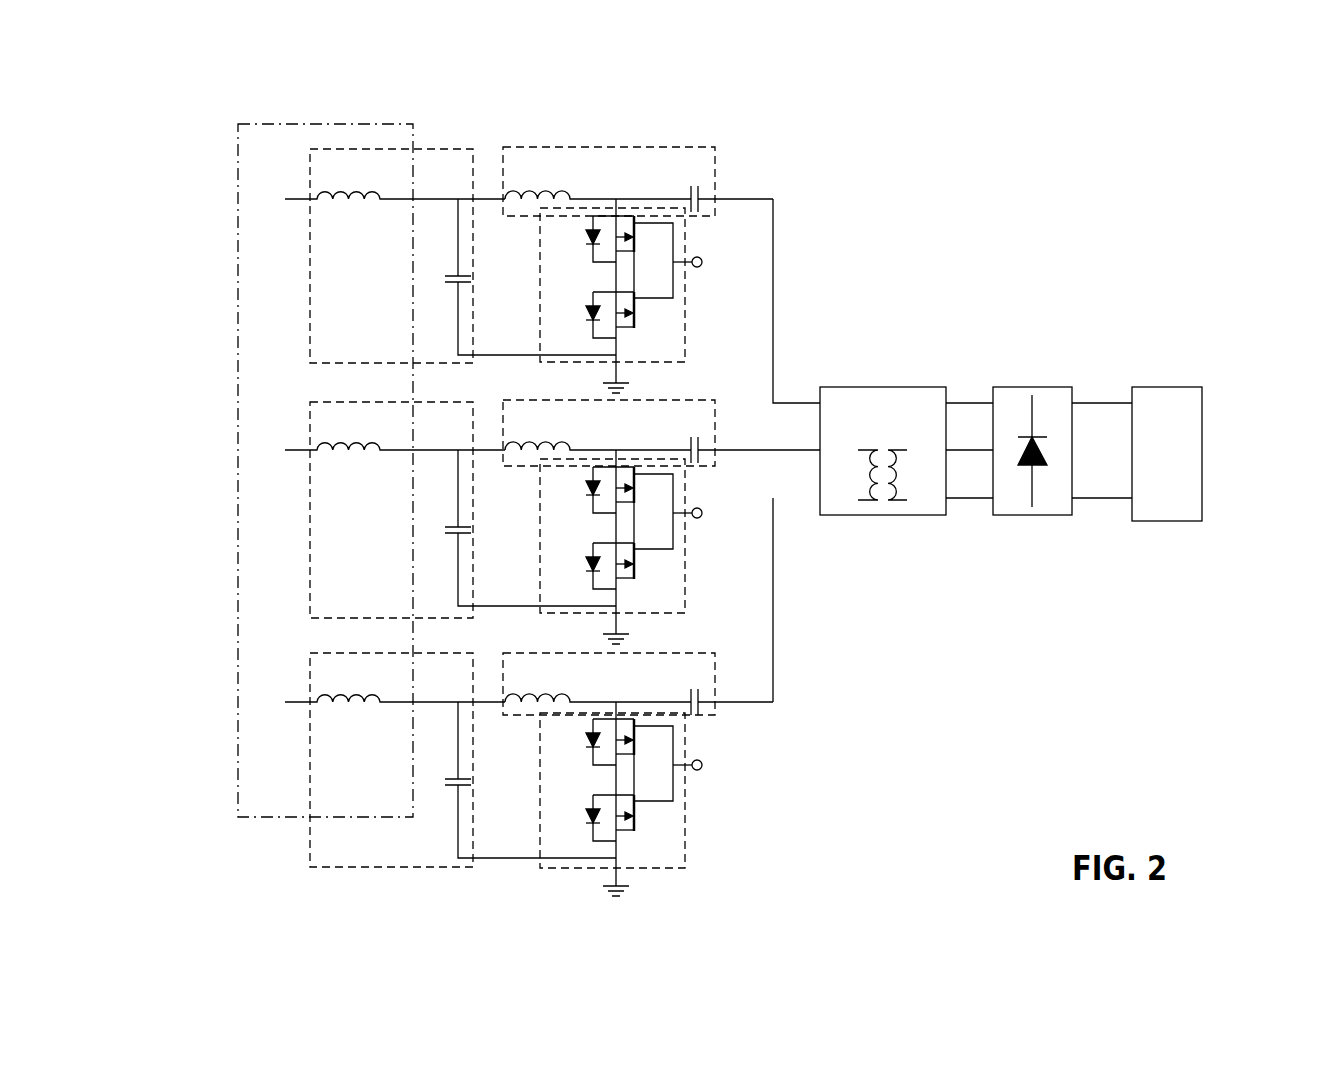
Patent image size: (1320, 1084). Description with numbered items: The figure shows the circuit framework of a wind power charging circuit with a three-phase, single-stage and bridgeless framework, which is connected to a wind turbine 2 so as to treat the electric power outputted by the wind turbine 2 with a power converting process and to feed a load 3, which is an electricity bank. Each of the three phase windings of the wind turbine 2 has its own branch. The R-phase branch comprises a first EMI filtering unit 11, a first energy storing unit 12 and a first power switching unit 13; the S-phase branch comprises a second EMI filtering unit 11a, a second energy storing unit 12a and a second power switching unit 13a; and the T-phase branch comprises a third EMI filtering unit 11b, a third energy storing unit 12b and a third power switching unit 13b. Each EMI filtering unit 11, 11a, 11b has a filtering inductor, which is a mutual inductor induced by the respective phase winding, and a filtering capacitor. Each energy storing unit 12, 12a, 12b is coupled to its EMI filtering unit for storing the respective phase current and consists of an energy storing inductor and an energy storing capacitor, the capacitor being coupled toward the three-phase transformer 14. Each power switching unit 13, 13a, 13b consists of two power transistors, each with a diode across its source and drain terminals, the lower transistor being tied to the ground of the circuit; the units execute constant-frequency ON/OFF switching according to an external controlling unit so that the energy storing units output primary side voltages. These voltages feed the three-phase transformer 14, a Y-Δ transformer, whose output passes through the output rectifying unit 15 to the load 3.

The wind turbine 2 is at (233, 779).
The load 3 is at (1204, 509).
The first electromagnetic interference (EMI) filtering unit 11 is at (436, 144).
The second electromagnetic interference (EMI) filtering unit 11a is at (387, 510).
The third electromagnetic interference (EMI) filtering unit 11b is at (387, 760).
The first energy storing unit 12 is at (675, 146).
The second energy storing unit 12a is at (638, 408).
The third energy storing unit 12b is at (638, 658).
The first power switching unit 13 is at (689, 322).
The second power switching unit 13a is at (695, 547).
The third power switching unit 13b is at (695, 799).
The three-phase transformer 14 is at (899, 393).
The output rectifying unit 15 is at (1049, 388).